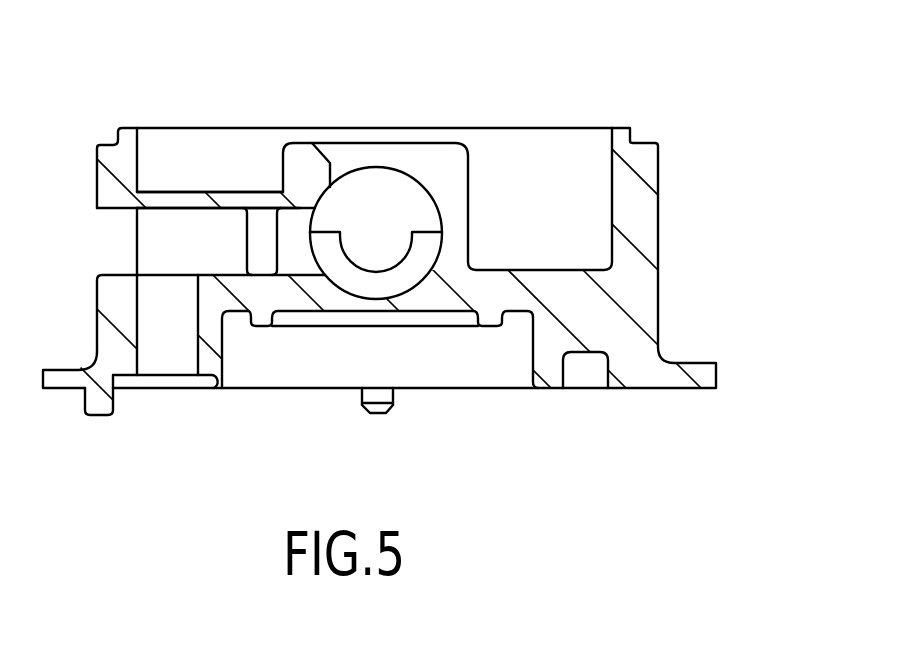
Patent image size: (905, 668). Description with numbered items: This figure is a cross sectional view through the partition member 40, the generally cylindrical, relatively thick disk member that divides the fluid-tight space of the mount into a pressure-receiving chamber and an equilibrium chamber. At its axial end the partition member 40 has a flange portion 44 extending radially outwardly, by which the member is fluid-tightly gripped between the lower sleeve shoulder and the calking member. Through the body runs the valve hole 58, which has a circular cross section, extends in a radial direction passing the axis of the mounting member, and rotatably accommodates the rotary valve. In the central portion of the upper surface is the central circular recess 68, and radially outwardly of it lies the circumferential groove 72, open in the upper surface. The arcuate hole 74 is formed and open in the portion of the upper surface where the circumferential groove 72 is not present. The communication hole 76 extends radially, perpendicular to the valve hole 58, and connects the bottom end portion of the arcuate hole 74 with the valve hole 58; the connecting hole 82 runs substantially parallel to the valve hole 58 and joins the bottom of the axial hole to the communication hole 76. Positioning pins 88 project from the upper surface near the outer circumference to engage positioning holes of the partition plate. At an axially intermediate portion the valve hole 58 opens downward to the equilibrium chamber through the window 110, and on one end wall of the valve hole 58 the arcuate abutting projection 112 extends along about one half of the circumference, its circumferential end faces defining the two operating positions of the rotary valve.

The partition member 40 is at (654, 76).
The flange portion 44 is at (67, 383).
The valve hole 58 is at (322, 193).
The central circular recess 68 is at (533, 360).
The circumferential groove 72 is at (565, 363).
The arcuate hole 74 is at (140, 360).
The communication hole 76 is at (184, 210).
The connecting hole 82 is at (261, 231).
The positioning pins 88 is at (102, 408).
The window 110 is at (333, 160).
The arcuate abutting projection 112 is at (410, 264).